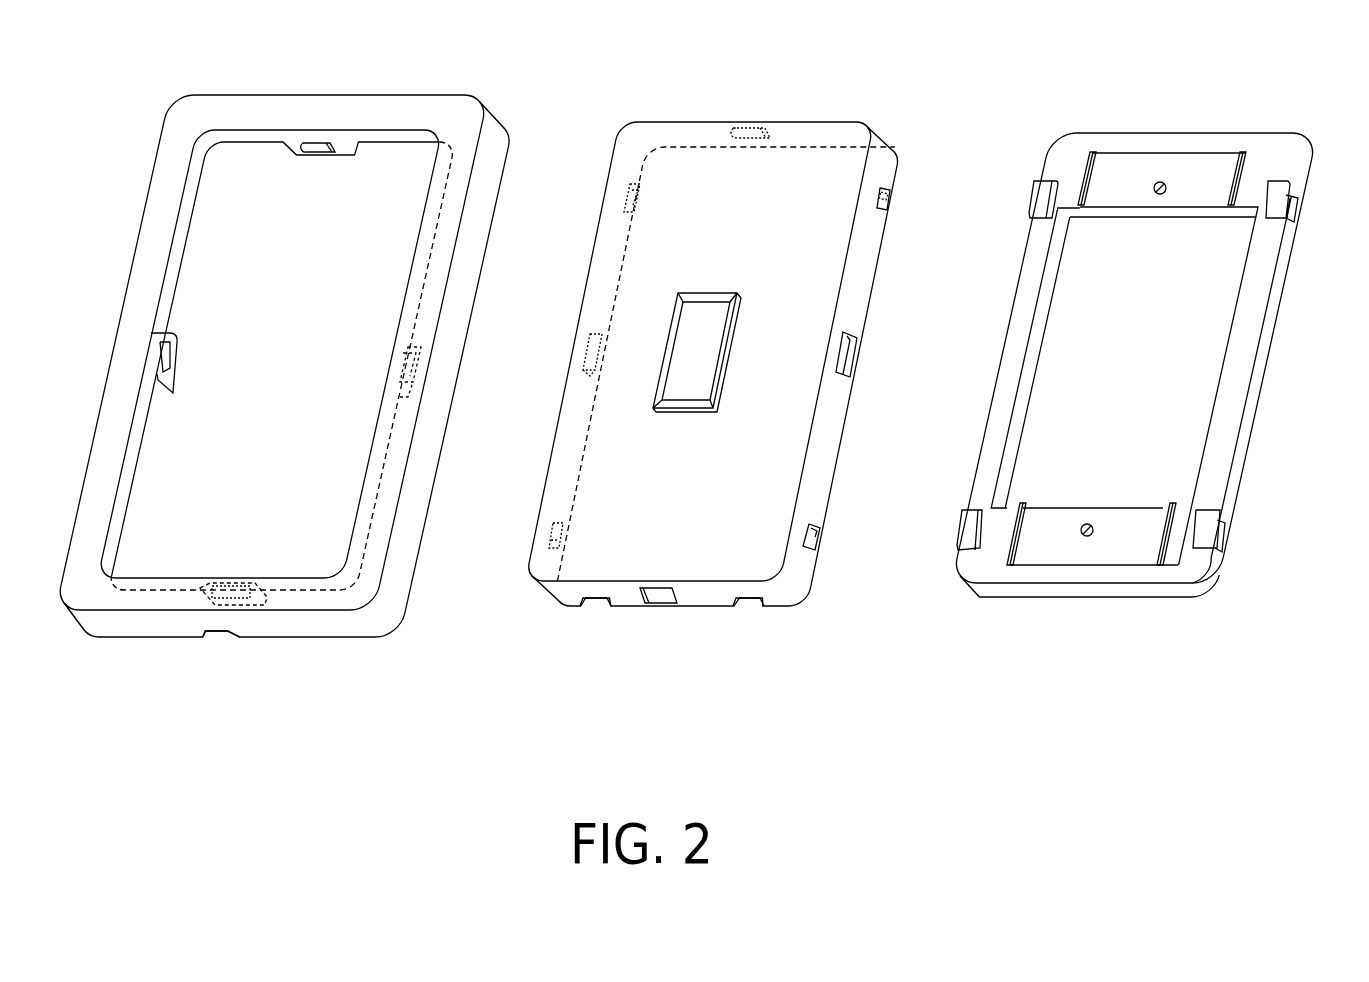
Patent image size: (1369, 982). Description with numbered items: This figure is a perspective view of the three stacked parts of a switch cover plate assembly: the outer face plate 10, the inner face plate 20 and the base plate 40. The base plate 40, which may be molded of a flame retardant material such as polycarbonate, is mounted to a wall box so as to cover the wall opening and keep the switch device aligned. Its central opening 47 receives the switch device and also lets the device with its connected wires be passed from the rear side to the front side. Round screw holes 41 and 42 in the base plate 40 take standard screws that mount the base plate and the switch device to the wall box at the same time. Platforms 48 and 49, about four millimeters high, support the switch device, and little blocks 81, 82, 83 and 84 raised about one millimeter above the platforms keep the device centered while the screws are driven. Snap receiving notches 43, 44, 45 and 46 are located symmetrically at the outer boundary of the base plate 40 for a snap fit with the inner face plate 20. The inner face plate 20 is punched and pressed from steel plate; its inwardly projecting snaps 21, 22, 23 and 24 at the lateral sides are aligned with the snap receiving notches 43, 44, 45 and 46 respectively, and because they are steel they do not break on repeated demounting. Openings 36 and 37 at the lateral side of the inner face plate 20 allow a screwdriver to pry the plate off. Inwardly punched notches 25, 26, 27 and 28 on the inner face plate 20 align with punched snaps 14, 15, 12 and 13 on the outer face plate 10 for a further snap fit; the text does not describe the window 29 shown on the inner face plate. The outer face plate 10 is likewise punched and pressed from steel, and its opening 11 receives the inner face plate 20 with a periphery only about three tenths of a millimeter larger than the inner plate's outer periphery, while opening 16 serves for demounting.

The outer face plate 10 is at (405, 108).
The opening 11 is at (296, 372).
The snap 12 is at (318, 148).
The snap 13 is at (410, 376).
The snap 14 is at (240, 600).
The snap 15 is at (156, 352).
The opening 16 is at (222, 642).
The inner face plate 20 is at (806, 182).
The inwardly projecting snap 21 is at (627, 203).
The inwardly projecting snap 22 is at (886, 201).
The inwardly projecting snap 23 is at (817, 543).
The inwardly projecting snap 24 is at (540, 532).
The notch 25 is at (657, 603).
The notch 26 is at (588, 346).
The notch 27 is at (750, 135).
The notch 28 is at (843, 360).
The window frame 29 is at (714, 369).
The opening 36 is at (594, 598).
The opening 37 is at (747, 600).
The base plate 40 is at (1247, 142).
The screw hole 41 is at (1157, 183).
The screw hole 42 is at (1087, 547).
The snap receiving notch 43 is at (1037, 192).
The snap receiving notch 44 is at (1297, 217).
The snap receiving notch 45 is at (1228, 538).
The snap receiving notch 46 is at (967, 528).
The central opening 47 is at (1148, 369).
The platform 48 is at (1112, 177).
The platform 49 is at (1050, 540).
The little block 81 is at (1087, 165).
The little block 82 is at (1247, 165).
The little block 83 is at (1163, 550).
The little block 84 is at (1000, 550).